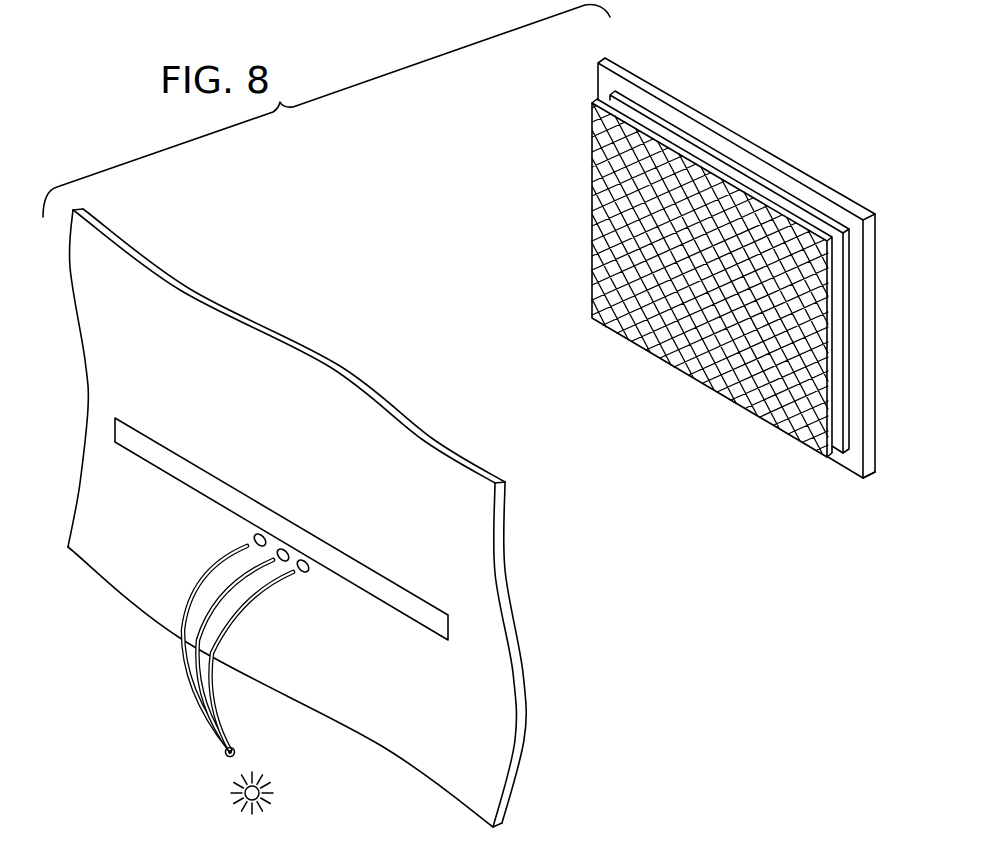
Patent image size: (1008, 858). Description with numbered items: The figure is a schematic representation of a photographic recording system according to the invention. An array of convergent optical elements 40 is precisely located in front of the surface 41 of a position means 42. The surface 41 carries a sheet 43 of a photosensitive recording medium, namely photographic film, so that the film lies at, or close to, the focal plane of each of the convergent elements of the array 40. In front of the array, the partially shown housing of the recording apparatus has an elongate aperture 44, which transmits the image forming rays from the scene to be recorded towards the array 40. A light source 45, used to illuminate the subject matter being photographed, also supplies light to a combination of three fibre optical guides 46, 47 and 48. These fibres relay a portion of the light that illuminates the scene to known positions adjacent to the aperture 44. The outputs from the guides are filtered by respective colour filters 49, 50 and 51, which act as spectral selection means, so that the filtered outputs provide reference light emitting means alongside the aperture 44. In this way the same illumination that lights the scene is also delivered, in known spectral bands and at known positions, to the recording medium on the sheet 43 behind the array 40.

The array of convergent optical elements 40 is at (590, 145).
The surface 41 is at (852, 237).
The position means 42 is at (795, 168).
The sheet of photosensitive recording medium 43 is at (850, 423).
The elongate aperture 44 is at (113, 423).
The light source 45 is at (262, 806).
The fibre optical guide 46 is at (213, 690).
The fibre optical guide 47 is at (207, 617).
The fibre optical guide 48 is at (202, 573).
The colour filter 49 is at (306, 573).
The colour filter 50 is at (284, 551).
The colour filter 51 is at (253, 536).